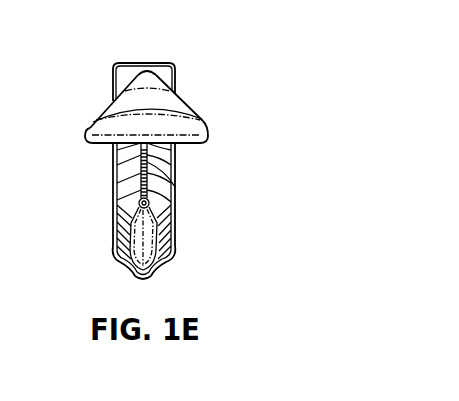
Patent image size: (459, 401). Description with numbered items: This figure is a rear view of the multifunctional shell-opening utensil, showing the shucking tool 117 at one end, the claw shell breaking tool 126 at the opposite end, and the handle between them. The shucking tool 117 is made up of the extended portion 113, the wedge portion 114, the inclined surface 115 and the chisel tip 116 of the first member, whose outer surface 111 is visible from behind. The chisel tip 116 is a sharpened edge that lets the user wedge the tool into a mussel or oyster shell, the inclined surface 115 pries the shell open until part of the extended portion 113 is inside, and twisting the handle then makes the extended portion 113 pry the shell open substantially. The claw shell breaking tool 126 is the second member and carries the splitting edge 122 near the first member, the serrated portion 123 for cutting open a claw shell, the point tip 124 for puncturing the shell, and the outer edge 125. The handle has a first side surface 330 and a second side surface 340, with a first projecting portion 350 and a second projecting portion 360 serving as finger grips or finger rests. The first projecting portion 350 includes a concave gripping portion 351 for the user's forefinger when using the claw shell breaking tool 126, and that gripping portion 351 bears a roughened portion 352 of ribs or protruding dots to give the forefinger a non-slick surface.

The outer surface 111 is at (150, 74).
The second projecting portion 360 is at (178, 71).
The shucking tool 117 is at (231, 75).
The chisel tip 116 is at (112, 114).
The wedge portion 114 is at (74, 110).
The extended portion 113 is at (203, 119).
The inclined surface 115 is at (107, 140).
The first side surface 330 is at (113, 178).
The point tip 124 is at (113, 202).
The roughened portion 352 is at (111, 247).
The claw shell breaking tool 126 is at (119, 281).
The outer edge 125 is at (150, 270).
The gripping portion 351 is at (181, 255).
The first projecting portion 350 is at (176, 247).
The second side surface 340 is at (177, 232).
The splitting edge 122 is at (176, 183).
The serrated portion 123 is at (176, 203).